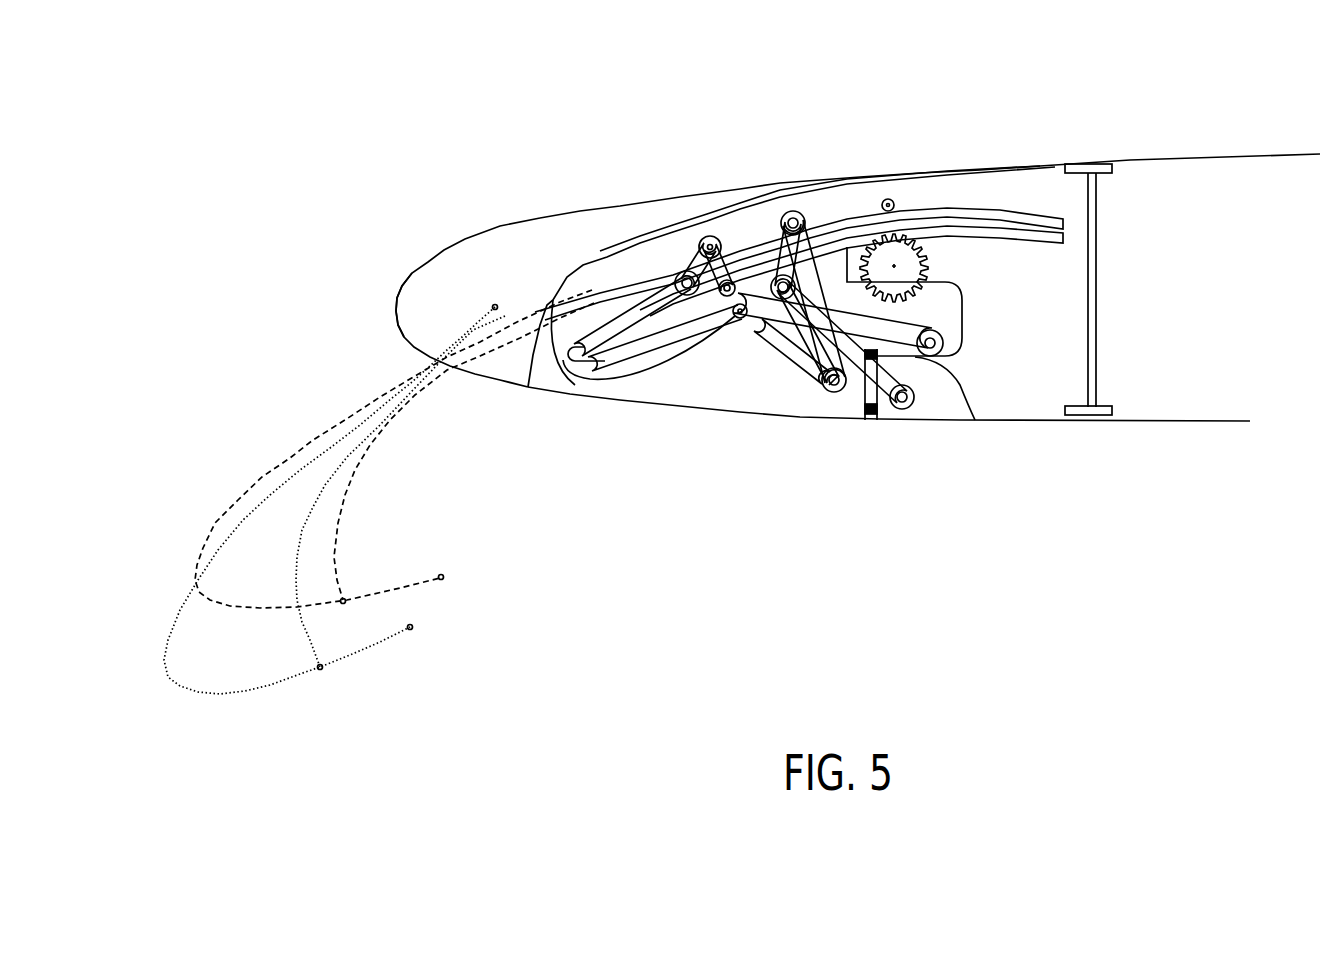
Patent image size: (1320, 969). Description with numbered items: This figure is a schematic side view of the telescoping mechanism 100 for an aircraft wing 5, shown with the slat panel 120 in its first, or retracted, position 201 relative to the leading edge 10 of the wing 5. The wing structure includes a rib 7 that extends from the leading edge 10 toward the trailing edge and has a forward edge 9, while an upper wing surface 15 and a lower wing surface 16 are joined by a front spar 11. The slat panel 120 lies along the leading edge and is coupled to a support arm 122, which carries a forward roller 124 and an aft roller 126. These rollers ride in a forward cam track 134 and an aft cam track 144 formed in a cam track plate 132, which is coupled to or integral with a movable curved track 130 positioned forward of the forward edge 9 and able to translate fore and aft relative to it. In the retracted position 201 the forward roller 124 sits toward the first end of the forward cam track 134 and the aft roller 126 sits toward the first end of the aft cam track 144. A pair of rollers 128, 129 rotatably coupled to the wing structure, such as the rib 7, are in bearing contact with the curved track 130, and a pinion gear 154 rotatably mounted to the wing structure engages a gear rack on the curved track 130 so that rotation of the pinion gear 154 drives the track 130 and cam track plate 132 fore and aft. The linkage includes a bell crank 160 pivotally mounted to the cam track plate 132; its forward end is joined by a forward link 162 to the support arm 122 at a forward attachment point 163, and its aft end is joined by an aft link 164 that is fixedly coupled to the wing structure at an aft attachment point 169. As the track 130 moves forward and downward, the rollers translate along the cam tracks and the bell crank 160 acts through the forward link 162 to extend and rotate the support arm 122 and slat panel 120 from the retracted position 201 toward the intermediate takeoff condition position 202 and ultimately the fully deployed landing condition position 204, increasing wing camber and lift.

The aircraft wing 5 is at (428, 112).
The rib 7 is at (1052, 360).
The forward edge 9 is at (943, 383).
The leading edge 10 is at (618, 270).
The front spar 11 is at (1088, 337).
The upper wing surface 15 is at (943, 172).
The lower wing surface 16 is at (1048, 422).
The telescoping mechanism 100 is at (873, 458).
The slat panel 120 is at (455, 272).
The support arm 122 is at (548, 378).
The forward roller 124 is at (703, 352).
The aft roller 126 is at (953, 353).
The roller 128 is at (718, 278).
The roller 129 is at (713, 240).
The movable curved track 130 is at (1058, 232).
The cam track plate 132 is at (613, 337).
The forward cam track 134 is at (580, 352).
The aft cam track 144 is at (792, 368).
The pinion gear 154 is at (905, 255).
The bell crank 160 is at (778, 245).
The forward link 162 is at (765, 352).
The forward attachment point 163 is at (690, 272).
The aft link 164 is at (843, 295).
The aft attachment point 169 is at (885, 408).
The retracted position 201 is at (398, 300).
The takeoff condition position 202 is at (287, 455).
The landing condition position 204 is at (165, 633).